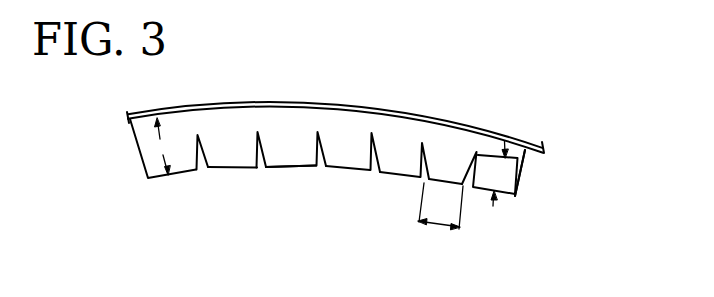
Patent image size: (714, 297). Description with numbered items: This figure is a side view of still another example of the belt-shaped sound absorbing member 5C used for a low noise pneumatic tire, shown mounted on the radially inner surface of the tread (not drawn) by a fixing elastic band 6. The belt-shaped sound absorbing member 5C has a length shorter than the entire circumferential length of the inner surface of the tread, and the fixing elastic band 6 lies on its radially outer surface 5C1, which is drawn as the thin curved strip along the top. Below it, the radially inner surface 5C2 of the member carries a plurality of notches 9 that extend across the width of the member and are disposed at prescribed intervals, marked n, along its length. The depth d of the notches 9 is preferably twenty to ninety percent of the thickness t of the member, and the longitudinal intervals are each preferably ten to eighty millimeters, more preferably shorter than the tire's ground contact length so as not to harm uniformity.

The radially outer surface 5C1 is at (375, 108).
The belt-shaped sound absorbing member 5C is at (342, 169).
The radially inner surface 5C2 is at (290, 168).
The notches 9 is at (258, 169).
The fixing elastic band 6 is at (533, 158).